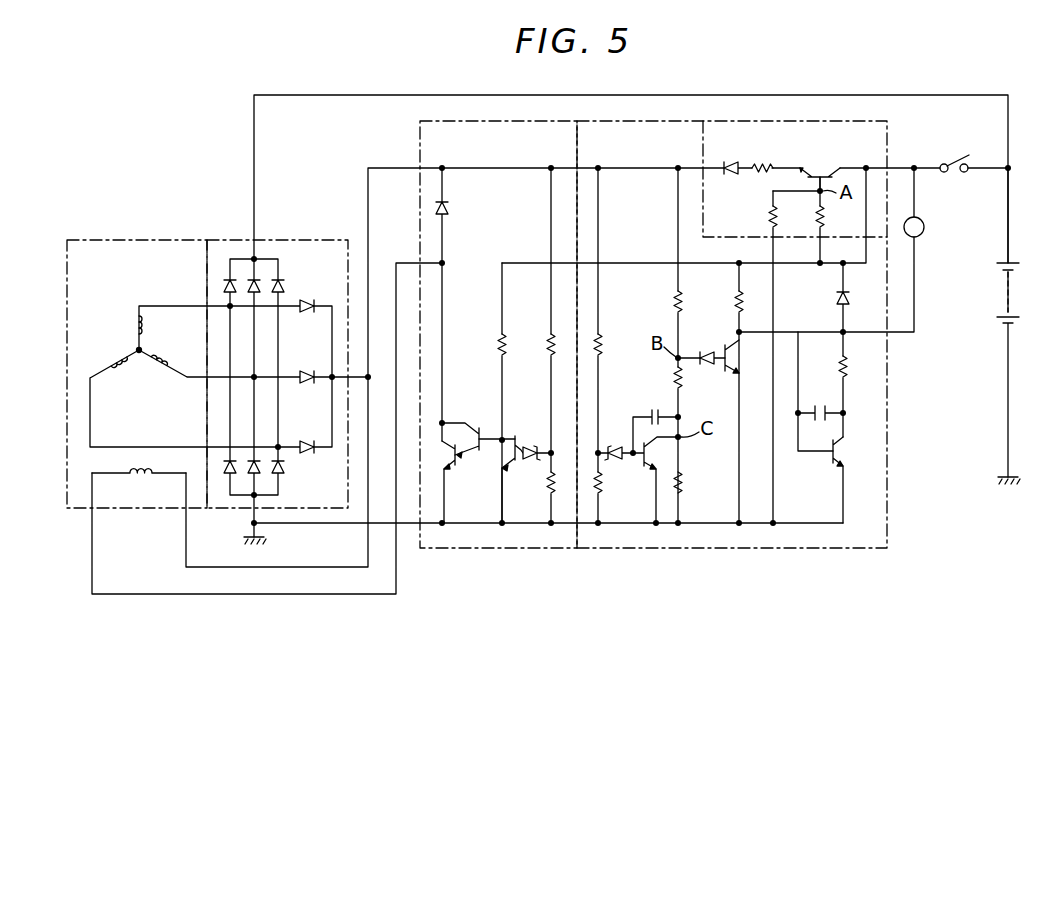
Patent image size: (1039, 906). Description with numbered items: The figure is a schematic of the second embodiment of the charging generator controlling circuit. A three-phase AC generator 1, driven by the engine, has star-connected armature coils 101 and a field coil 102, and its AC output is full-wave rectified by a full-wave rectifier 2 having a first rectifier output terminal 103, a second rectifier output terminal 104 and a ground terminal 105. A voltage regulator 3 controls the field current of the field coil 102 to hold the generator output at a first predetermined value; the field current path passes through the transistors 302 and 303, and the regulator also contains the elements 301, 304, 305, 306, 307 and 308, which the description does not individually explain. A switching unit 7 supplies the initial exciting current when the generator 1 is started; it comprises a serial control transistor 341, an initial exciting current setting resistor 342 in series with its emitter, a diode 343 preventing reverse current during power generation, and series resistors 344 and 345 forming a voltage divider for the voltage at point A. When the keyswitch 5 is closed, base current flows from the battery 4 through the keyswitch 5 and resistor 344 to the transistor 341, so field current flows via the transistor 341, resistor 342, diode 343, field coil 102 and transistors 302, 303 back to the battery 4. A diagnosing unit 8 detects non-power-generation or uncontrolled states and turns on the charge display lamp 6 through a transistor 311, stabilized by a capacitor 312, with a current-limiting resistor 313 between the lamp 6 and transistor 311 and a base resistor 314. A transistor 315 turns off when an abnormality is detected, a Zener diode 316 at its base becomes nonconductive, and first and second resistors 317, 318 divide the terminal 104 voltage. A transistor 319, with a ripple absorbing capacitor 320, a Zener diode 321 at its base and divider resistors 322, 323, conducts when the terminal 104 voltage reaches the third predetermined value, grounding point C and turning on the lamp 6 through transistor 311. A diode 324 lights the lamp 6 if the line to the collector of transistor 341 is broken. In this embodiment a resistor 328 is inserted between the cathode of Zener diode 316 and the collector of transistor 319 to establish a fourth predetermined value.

The three-phase AC generator 1 is at (126, 247).
The full-wave rectifier 2 is at (270, 247).
The voltage regulator 3 is at (483, 541).
The battery 4 is at (995, 300).
The keyswitch 5 is at (955, 153).
The charge display lamp 6 is at (925, 227).
The switching unit 7 is at (850, 126).
The diagnosing unit 8 is at (795, 545).
The armature (stator) windings 101 is at (150, 362).
The field coil 102 is at (135, 476).
The first rectifier output terminal 103 is at (283, 280).
The second rectifier output terminal 104 is at (330, 362).
The ground terminal 105 is at (283, 478).
The diode 301 is at (455, 208).
The transistor 302 is at (448, 480).
The transistor 303 is at (480, 422).
The resistor 304 is at (495, 340).
The transistor 305 is at (502, 452).
The zener diode 306 is at (531, 446).
The resistor 307 is at (545, 340).
The resistor 308 is at (548, 482).
The transistor 311 is at (841, 450).
The capacitor 312 is at (820, 404).
The resistor 313 is at (838, 365).
The resistor 314 is at (735, 302).
The transistor 315 is at (730, 376).
The Zener diode 316 is at (706, 348).
The first resistor 317 is at (672, 300).
The second resistor 318 is at (686, 484).
The transistor 319 is at (661, 453).
The ripple absorbing capacitor 320 is at (655, 406).
The Zener diode 321 is at (615, 463).
The resistor 322 is at (602, 342).
The resistor 323 is at (603, 488).
The diode 324 is at (835, 298).
The resistor 328 is at (672, 380).
The serial control transistor 341 is at (825, 170).
The initial exciting current setting resistor 342 is at (762, 160).
The diode 343 is at (733, 161).
The resistor 344 is at (841, 217).
The resistor 345 is at (770, 218).